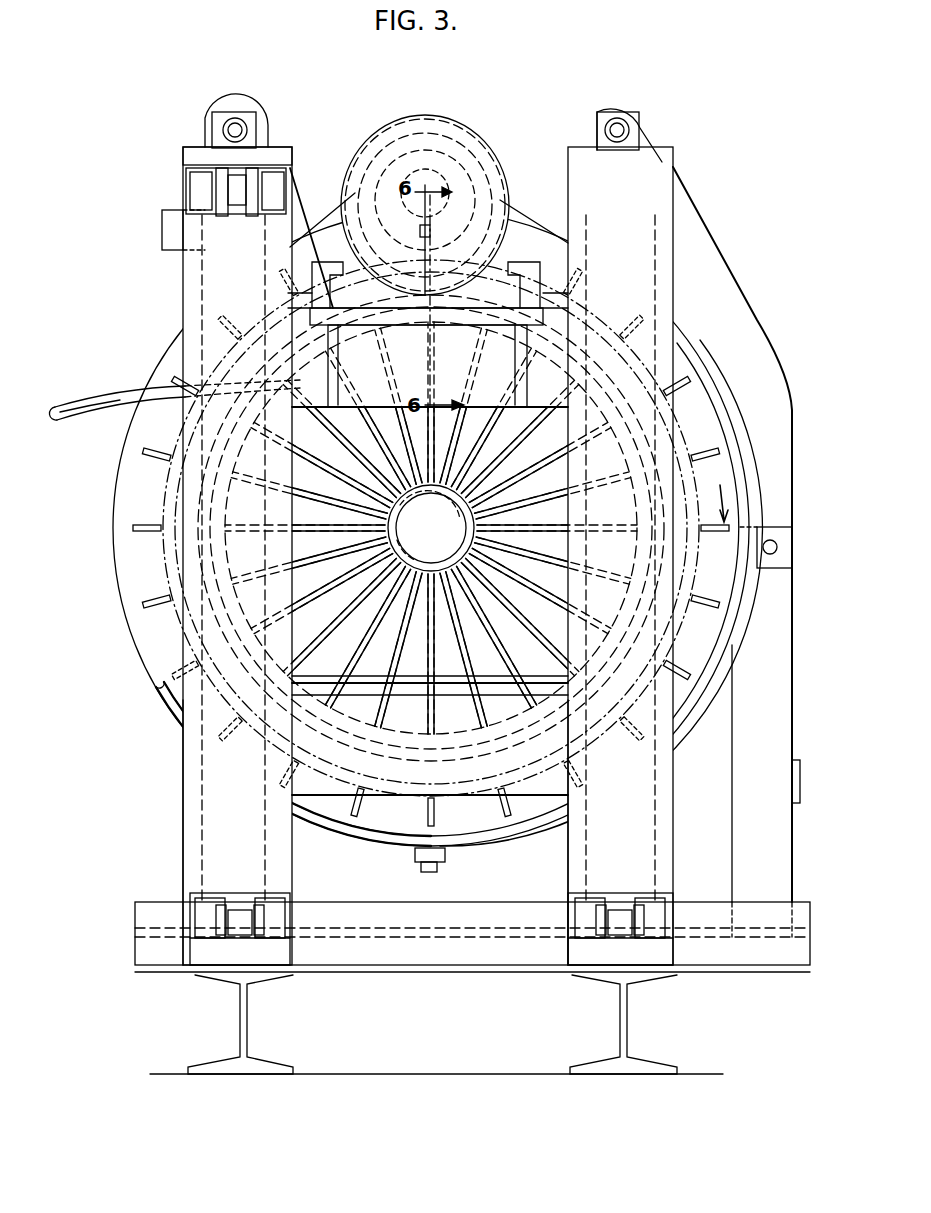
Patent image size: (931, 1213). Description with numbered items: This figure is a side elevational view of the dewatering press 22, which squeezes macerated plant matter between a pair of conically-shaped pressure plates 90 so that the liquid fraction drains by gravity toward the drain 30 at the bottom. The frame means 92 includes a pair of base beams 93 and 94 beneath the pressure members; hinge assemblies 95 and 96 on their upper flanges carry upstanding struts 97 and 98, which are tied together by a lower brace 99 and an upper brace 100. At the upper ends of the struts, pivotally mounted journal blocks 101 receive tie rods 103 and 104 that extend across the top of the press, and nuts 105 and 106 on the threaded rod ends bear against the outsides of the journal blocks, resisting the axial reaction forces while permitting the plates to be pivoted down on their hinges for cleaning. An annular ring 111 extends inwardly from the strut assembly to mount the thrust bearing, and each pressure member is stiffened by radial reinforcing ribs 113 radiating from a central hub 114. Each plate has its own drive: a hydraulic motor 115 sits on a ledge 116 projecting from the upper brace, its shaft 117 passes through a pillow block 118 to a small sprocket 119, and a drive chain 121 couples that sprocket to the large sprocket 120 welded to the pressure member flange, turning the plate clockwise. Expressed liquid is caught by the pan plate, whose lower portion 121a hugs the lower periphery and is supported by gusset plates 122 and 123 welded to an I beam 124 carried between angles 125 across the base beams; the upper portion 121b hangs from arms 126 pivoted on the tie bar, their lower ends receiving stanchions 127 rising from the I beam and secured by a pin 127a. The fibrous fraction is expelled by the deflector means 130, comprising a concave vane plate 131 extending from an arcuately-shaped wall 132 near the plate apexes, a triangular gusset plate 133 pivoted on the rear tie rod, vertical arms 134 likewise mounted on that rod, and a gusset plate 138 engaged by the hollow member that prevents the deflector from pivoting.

The dewatering press 22 is at (110, 566).
The drain 30 is at (412, 860).
The pressure plate 90 is at (138, 636).
The frame means 92 is at (195, 800).
The base beam 93 is at (238, 1024).
The base beam 94 is at (627, 1032).
The hinge assembly 95 is at (216, 925).
The hinge assembly 96 is at (638, 925).
The upstanding strut 97 is at (195, 840).
The upstanding strut 98 is at (660, 830).
The lower brace 99 is at (487, 792).
The upper brace 100 is at (522, 458).
The journal block 101 is at (212, 127).
The tie rod 103 is at (240, 125).
The tie rod 104 is at (617, 125).
The nut 105 is at (232, 120).
The nut 106 is at (602, 125).
The annular ring 111 is at (630, 547).
The reinforcing rib 113 is at (598, 268).
The central hub 114 is at (420, 568).
The hydraulic motor 115 is at (455, 145).
The ledge 116 is at (472, 320).
The motor shaft 117 is at (410, 236).
The pillow block 118 is at (345, 195).
The small sprocket 119 is at (440, 235).
The large sprocket 120 is at (125, 597).
The drive chain 121 is at (520, 255).
The lower portion of pan plate 121a is at (548, 842).
The upper portion of pan plate 121b is at (737, 430).
The gusset plate 122 is at (165, 880).
The gusset plate 123 is at (558, 905).
The I beam 124 is at (768, 945).
The angle 125 is at (190, 960).
The arm 126 is at (742, 290).
The stanchion 127 is at (794, 710).
The pin 127a is at (778, 547).
The deflector means 130 is at (142, 378).
The vane plate 131 is at (92, 418).
The arcuately-shaped wall 132 is at (452, 519).
The gusset plate 133 is at (298, 248).
The arm 134 is at (237, 202).
The gusset plate 138 is at (160, 228).